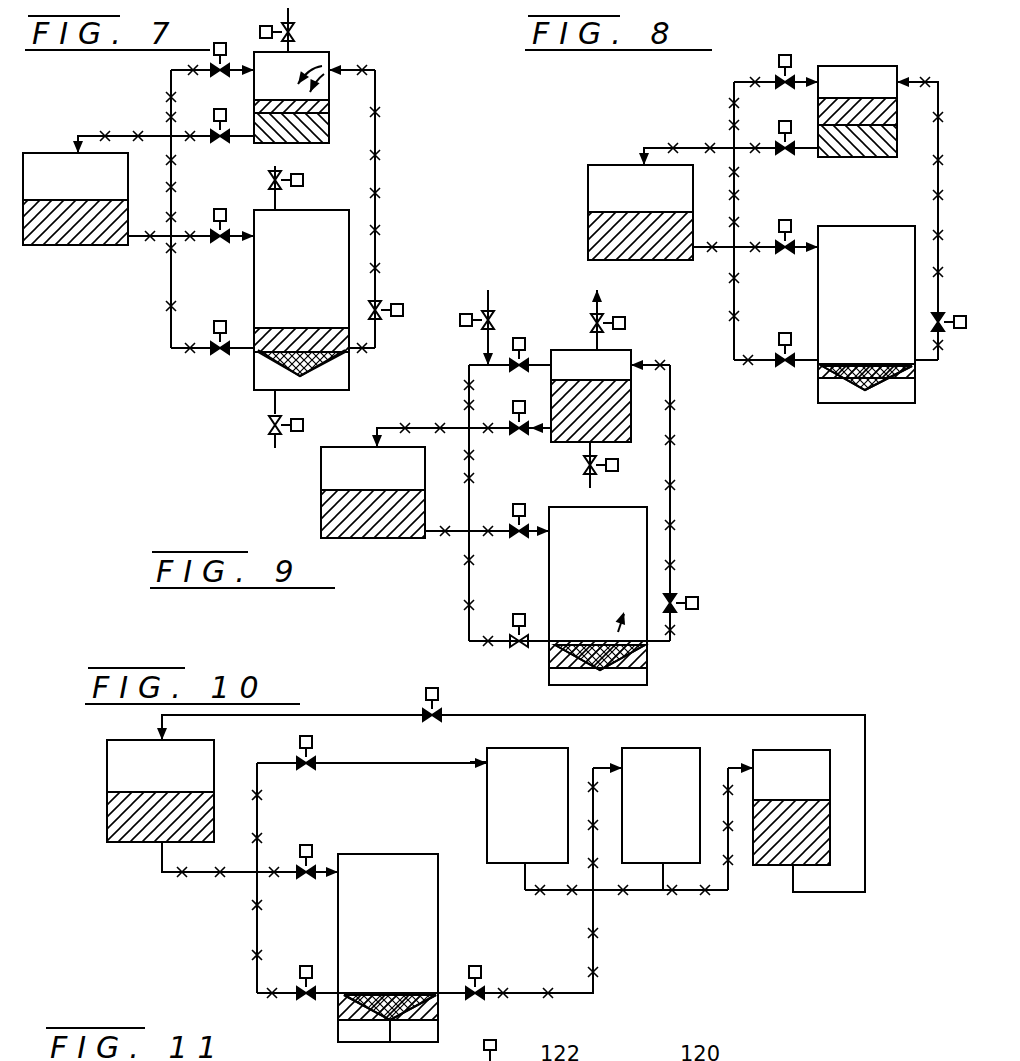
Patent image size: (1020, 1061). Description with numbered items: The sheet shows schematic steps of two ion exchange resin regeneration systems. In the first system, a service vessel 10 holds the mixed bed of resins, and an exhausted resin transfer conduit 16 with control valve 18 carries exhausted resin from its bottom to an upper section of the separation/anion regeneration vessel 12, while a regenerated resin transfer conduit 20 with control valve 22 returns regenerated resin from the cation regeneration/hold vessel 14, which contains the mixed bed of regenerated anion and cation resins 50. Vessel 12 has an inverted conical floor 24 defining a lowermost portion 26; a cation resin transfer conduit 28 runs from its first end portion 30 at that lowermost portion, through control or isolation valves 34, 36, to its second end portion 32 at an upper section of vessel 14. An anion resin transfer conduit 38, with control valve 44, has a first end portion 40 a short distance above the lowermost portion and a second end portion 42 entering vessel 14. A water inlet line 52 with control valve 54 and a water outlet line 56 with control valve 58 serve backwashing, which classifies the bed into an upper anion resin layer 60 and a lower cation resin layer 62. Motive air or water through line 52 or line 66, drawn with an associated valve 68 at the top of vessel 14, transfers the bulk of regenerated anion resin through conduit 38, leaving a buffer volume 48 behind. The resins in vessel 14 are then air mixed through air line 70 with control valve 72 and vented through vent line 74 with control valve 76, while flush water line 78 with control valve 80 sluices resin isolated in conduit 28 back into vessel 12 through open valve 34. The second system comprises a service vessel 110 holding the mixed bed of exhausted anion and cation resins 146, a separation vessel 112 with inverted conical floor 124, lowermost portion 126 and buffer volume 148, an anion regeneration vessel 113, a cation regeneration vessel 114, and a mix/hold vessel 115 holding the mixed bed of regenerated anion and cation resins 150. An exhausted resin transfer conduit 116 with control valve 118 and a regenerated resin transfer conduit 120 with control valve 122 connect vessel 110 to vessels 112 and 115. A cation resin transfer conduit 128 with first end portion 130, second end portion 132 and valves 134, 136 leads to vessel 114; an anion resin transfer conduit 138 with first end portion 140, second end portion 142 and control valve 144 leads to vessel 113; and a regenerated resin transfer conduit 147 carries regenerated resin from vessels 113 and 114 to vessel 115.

In FIG. 7, the service vessel 10 is at (23, 158).
In FIG. 8, the service vessel 10 is at (588, 194).
In FIG. 9, the service vessel 10 is at (320, 474).
In FIG. 7, the separation/anion regeneration vessel 12 is at (358, 264).
In FIG. 8, the separation/anion regeneration vessel 12 is at (922, 236).
In FIG. 9, the separation/anion regeneration vessel 12 is at (648, 508).
In FIG. 7, the cation regeneration/hold vessel 14 is at (330, 58).
In FIG. 8, the cation regeneration/hold vessel 14 is at (910, 64).
In FIG. 9, the cation regeneration/hold vessel 14 is at (634, 382).
In FIG. 7, the exhausted resin transfer conduit 16 is at (190, 240).
In FIG. 8, the exhausted resin transfer conduit 16 is at (770, 252).
In FIG. 9, the exhausted resin transfer conduit 16 is at (452, 540).
In FIG. 7, the control valve 18 is at (222, 244).
In FIG. 8, the control valve 18 is at (788, 254).
In FIG. 9, the control valve 18 is at (522, 538).
In FIG. 7, the regenerated resin transfer conduit 20 is at (156, 138).
In FIG. 8, the regenerated resin transfer conduit 20 is at (686, 146).
In FIG. 9, the regenerated resin transfer conduit 20 is at (446, 426).
In FIG. 7, the control valve 22 is at (222, 142).
In FIG. 8, the control valve 22 is at (790, 156).
In FIG. 9, the control valve 22 is at (518, 434).
In FIG. 7, the inverted conical floor 24 is at (306, 380).
In FIG. 8, the inverted conical floor 24 is at (850, 400).
In FIG. 9, the inverted conical floor 24 is at (632, 674).
In FIG. 7, the lowermost portion 26 is at (280, 376).
In FIG. 8, the lowermost portion 26 is at (842, 382).
In FIG. 9, the lowermost portion 26 is at (576, 660).
In FIG. 7, the cation resin transfer conduit 28 is at (173, 293).
In FIG. 8, the cation resin transfer conduit 28 is at (736, 210).
In FIG. 9, the cation resin transfer conduit 28 is at (468, 586).
In FIG. 7, the first end portion 30 is at (262, 366).
In FIG. 8, the first end portion 30 is at (832, 370).
In FIG. 9, the first end portion 30 is at (548, 648).
In FIG. 7, the second end portion 32 is at (228, 64).
In FIG. 8, the second end portion 32 is at (790, 76).
In FIG. 9, the second end portion 32 is at (526, 360).
In FIG. 7, the control or isolation valve 34 is at (222, 356).
In FIG. 8, the control or isolation valve 34 is at (782, 370).
In FIG. 9, the control or isolation valve 34 is at (508, 646).
In FIG. 7, the control or isolation valve 36 is at (190, 70).
In FIG. 8, the control or isolation valve 36 is at (770, 78).
In FIG. 9, the control or isolation valve 36 is at (520, 370).
In FIG. 7, the anion resin transfer conduit 38 is at (378, 176).
In FIG. 8, the anion resin transfer conduit 38 is at (918, 176).
In FIG. 9, the anion resin transfer conduit 38 is at (672, 504).
In FIG. 7, the first end portion 40 is at (368, 352).
In FIG. 8, the first end portion 40 is at (924, 364).
In FIG. 9, the first end portion 40 is at (672, 650).
In FIG. 7, the second end portion 42 is at (368, 70).
In FIG. 7, the control valve 44 is at (380, 302).
In FIG. 8, the control valve 44 is at (924, 318).
In FIG. 9, the control valve 44 is at (674, 594).
In FIG. 7, the buffer volume 48 is at (330, 374).
In FIG. 8, the buffer volume 48 is at (894, 396).
In FIG. 9, the buffer volume 48 is at (650, 364).
In FIG. 7, the mixed bed of regenerated anion and cation resins 50 is at (74, 240).
In FIG. 8, the mixed bed of regenerated anion and cation resins 50 is at (586, 228).
In FIG. 9, the mixed bed of regenerated anion and cation resins 50 is at (324, 516).
In FIG. 7, the water inlet line 52 is at (268, 430).
In FIG. 7, the control valve 54 is at (272, 442).
In FIG. 7, the water outlet line 56 is at (288, 206).
In FIG. 7, the control valve 58 is at (268, 182).
In FIG. 7, the upper anion resin layer 60 is at (324, 108).
In FIG. 8, the upper anion resin layer 60 is at (894, 110).
In FIG. 8, the lower cation resin layer 62 is at (890, 154).
In FIG. 7, the line 66 is at (290, 40).
In FIG. 7, the vent valve 68 is at (292, 32).
In FIG. 9, the air line 70 is at (580, 462).
In FIG. 9, the control valve 72 is at (584, 474).
In FIG. 9, the vent line 74 is at (602, 346).
In FIG. 9, the control valve 76 is at (588, 326).
In FIG. 9, the flush water line 78 is at (484, 338).
In FIG. 9, the control valve 80 is at (494, 314).
In FIG. 10, the service vessel 110 is at (106, 782).
In FIG. 10, the separation vessel 112 is at (438, 920).
In FIG. 10, the anion regeneration vessel 113 is at (722, 736).
In FIG. 10, the cation regeneration vessel 114 is at (486, 828).
In FIG. 10, the mix/hold vessel 115 is at (830, 766).
In FIG. 10, the exhausted resin transfer conduit 116 is at (234, 874).
In FIG. 10, the control valve 118 is at (316, 864).
In FIG. 10, the regenerated resin transfer conduit 120 is at (384, 714).
In FIG. 10, the control valve 122 is at (436, 720).
In FIG. 10, the inverted conical floor 124 is at (418, 1004).
In FIG. 10, the lowermost portion 126 is at (352, 1008).
In FIG. 10, the cation resin transfer conduit 128 is at (256, 930).
In FIG. 10, the first end portion 130 is at (406, 1022).
In FIG. 10, the second end portion 132 is at (450, 762).
In FIG. 10, the control or isolation valve 134 is at (296, 998).
In FIG. 10, the control or isolation valve 136 is at (308, 758).
In FIG. 10, the anion resin transfer conduit 138 is at (596, 914).
In FIG. 10, the first end portion 140 is at (452, 990).
In FIG. 10, the second end portion 142 is at (594, 764).
In FIG. 10, the control valve 144 is at (480, 990).
In FIG. 10, the mixed bed of exhausted anion and cation resins 146 is at (122, 822).
In FIG. 10, the regenerated resin transfer conduit 147 is at (696, 894).
In FIG. 10, the buffer volume 148 is at (368, 1014).
In FIG. 10, the mixed bed of regenerated anion and cation resins 150 is at (804, 814).